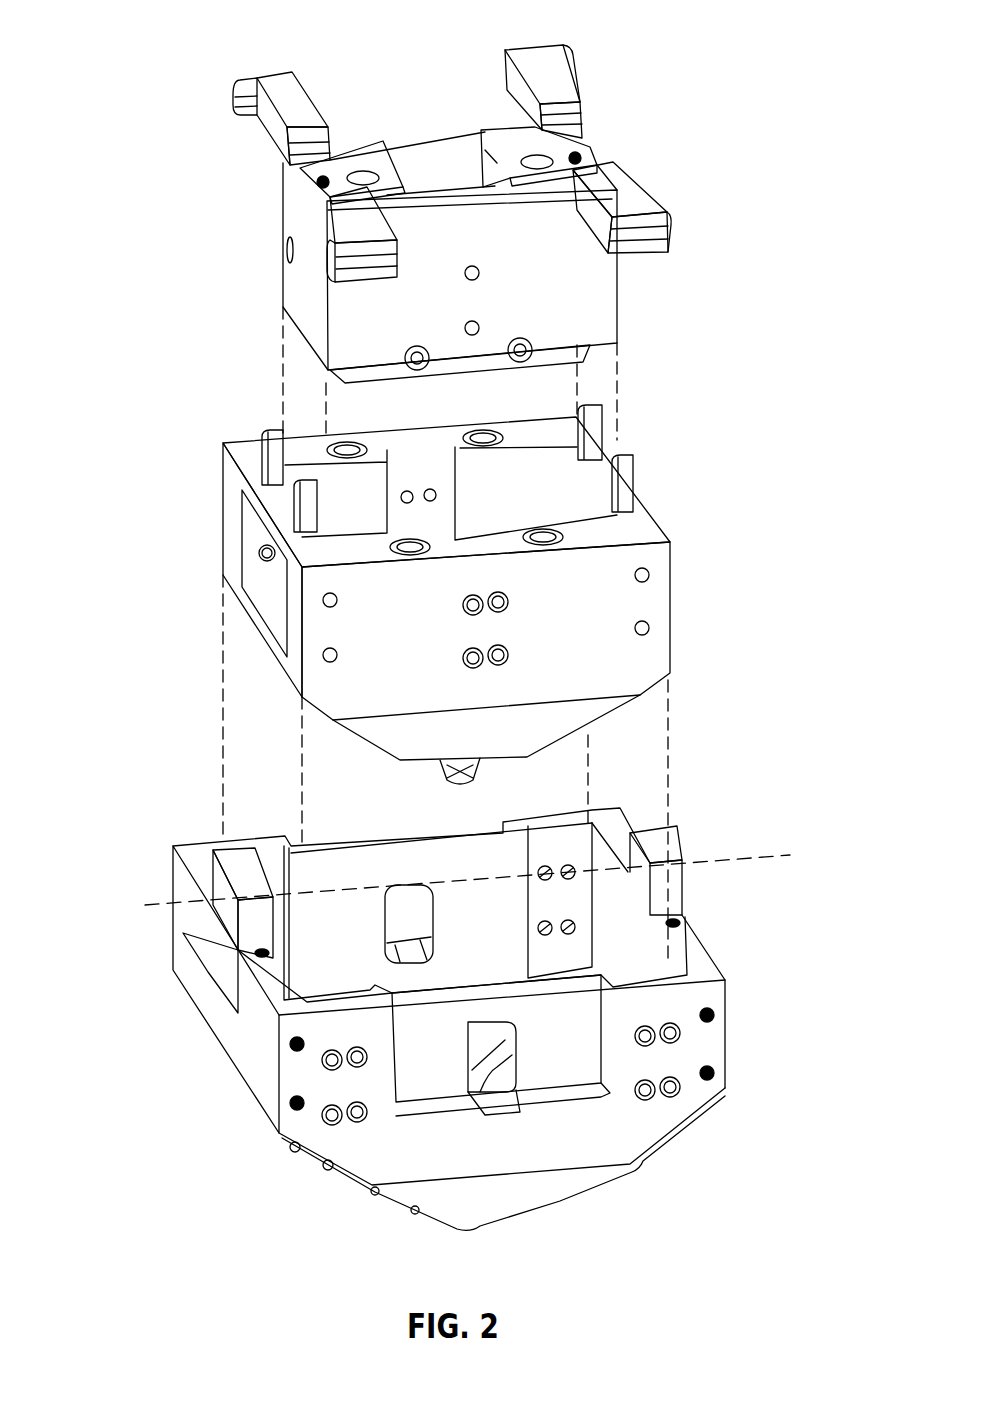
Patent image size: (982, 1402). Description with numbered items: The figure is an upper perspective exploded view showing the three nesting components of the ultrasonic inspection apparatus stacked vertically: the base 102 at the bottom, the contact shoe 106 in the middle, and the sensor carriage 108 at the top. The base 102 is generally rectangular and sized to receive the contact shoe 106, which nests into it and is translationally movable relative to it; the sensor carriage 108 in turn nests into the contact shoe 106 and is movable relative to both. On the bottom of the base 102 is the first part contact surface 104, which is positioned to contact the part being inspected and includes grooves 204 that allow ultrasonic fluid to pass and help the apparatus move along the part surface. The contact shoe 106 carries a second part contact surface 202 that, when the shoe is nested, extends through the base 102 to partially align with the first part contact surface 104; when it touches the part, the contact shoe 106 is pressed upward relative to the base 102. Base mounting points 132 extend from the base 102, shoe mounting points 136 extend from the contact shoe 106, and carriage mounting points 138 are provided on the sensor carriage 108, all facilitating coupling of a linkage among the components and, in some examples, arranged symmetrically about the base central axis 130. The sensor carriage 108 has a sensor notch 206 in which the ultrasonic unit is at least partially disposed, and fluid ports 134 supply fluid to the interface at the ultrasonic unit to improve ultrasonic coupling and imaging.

The base 102 is at (170, 957).
The first part contact surface 104 is at (300, 1156).
The contact shoe 106 is at (222, 516).
The sensor carriage 108 is at (279, 197).
The base central axis 130 is at (727, 858).
The base mounting point 132 is at (660, 840).
The fluid ports 134 is at (545, 535).
The shoe mounting points 136 is at (295, 512).
The carriage mounting points 138 is at (278, 78).
The second part contact surface 202 is at (447, 772).
The grooves 204 is at (326, 1166).
The sensor notch 206 is at (478, 128).